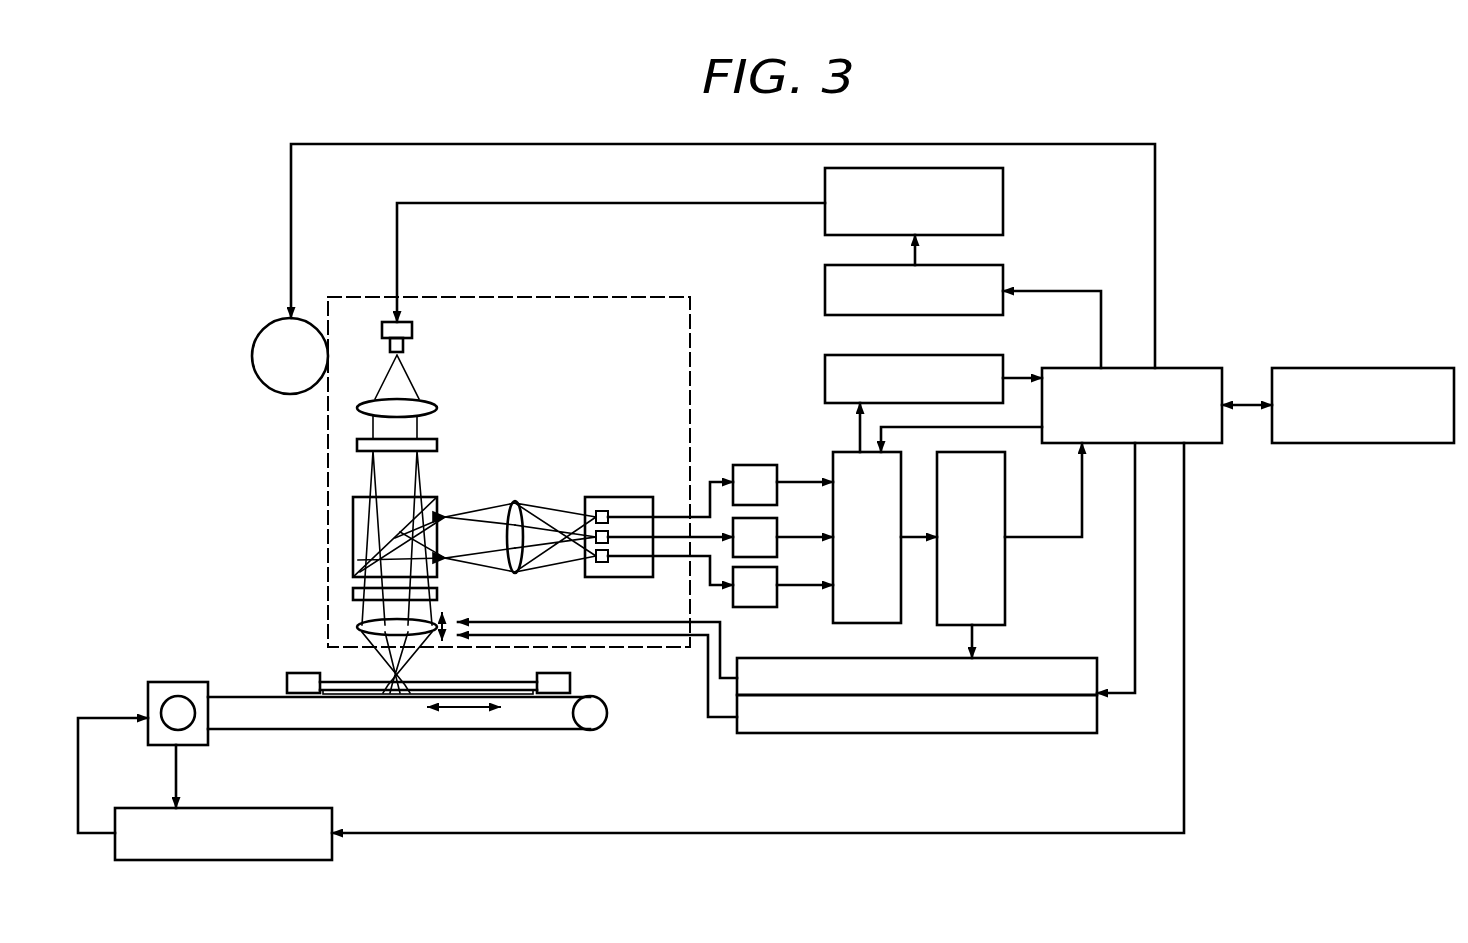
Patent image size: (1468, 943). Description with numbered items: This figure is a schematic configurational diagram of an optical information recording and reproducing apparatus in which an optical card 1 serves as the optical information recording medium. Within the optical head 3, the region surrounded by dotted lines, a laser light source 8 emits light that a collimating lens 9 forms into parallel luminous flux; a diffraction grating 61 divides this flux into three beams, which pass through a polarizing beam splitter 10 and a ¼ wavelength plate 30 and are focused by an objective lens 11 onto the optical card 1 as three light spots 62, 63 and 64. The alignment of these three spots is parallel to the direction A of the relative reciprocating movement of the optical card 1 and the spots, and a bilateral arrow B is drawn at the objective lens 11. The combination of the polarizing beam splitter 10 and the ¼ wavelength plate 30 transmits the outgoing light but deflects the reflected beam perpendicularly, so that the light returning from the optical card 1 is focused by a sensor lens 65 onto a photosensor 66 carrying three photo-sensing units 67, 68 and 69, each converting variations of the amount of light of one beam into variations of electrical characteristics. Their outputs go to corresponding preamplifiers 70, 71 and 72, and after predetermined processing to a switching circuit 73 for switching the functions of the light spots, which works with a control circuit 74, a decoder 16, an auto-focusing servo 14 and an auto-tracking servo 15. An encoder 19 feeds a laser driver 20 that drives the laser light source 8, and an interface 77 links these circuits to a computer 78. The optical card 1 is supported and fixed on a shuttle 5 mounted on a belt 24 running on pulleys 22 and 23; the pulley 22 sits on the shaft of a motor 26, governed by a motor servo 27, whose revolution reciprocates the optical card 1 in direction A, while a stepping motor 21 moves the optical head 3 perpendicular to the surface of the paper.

The optical card 1 is at (337, 682).
The optical head 3 is at (340, 296).
The shuttle 5 is at (560, 685).
The laser light source 8 is at (413, 330).
The collimating lens 9 is at (413, 399).
The polarizing beam splitter 10 is at (410, 526).
The objective lens 11 is at (355, 625).
The auto-focusing servo 14 is at (1030, 658).
The auto-tracking servo 15 is at (1040, 735).
The decoder 16 is at (825, 381).
The encoder 19 is at (825, 295).
The laser driver 20 is at (1003, 190).
The stepping motor 21 is at (252, 363).
The pulley 22 is at (183, 718).
The pulley 23 is at (592, 720).
The belt 24 is at (460, 730).
The motor 26 is at (160, 742).
The motor servo 27 is at (222, 862).
The ¼ wavelength plate 30 is at (353, 590).
The diffraction grating 61 is at (437, 447).
The light spot 62 is at (395, 692).
The light spot 63 is at (418, 697).
The light spot 64 is at (370, 692).
The sensor lens 65 is at (517, 500).
The photosensor 66 is at (633, 568).
The photo-sensing unit 67 is at (593, 566).
The photo-sensing unit 68 is at (600, 510).
The photo-sensing unit 69 is at (598, 566).
The preamplifier 70 is at (777, 519).
The preamplifier 71 is at (757, 465).
The preamplifier 72 is at (760, 607).
The switching circuit 73 is at (867, 623).
The control circuit 74 is at (1005, 577).
The interface 77 is at (1190, 368).
The computer 78 is at (1349, 368).
The direction of relative reciprocating movement A is at (480, 709).
The direction of objective lens movement B is at (447, 627).